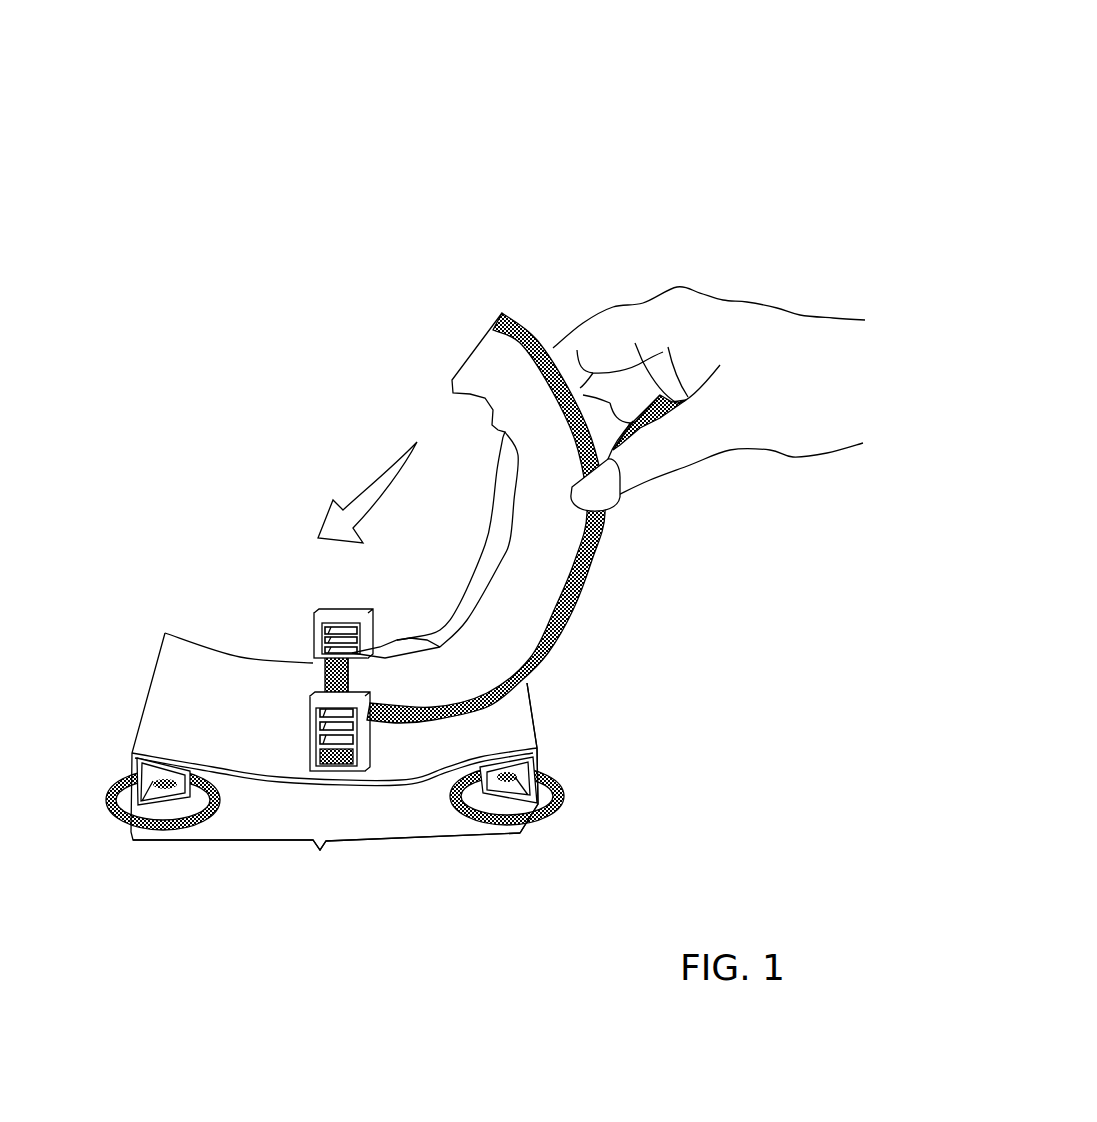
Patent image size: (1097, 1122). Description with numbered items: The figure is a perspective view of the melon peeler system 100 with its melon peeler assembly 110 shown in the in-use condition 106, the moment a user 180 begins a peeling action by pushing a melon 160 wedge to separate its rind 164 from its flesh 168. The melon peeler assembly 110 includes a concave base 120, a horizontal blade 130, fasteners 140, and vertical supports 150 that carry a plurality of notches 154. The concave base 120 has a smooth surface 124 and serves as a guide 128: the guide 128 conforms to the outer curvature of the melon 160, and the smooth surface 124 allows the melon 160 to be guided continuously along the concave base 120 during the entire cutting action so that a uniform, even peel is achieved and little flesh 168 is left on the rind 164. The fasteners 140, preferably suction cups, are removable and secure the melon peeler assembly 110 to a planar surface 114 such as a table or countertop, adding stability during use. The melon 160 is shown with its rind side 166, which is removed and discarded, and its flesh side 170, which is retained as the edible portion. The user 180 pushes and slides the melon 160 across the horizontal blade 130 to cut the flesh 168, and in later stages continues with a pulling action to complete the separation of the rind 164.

The melon peeler system 100 is at (712, 88).
The in-use condition 106 is at (743, 133).
The melon peeler assembly 110 is at (758, 206).
The planar surface 114 is at (323, 856).
The concave base 120 is at (147, 688).
The smooth surface 124 is at (533, 715).
The guide 128 is at (188, 666).
The horizontal blade 130 is at (322, 678).
The fastener 140 is at (110, 817).
The vertical support 150 is at (321, 607).
The notches 154 is at (322, 712).
The melon 160 is at (543, 518).
The rind 164 is at (563, 652).
The rind side 166 is at (604, 554).
The flesh 168 is at (460, 565).
The flesh side 170 is at (484, 518).
The user 180 is at (774, 306).